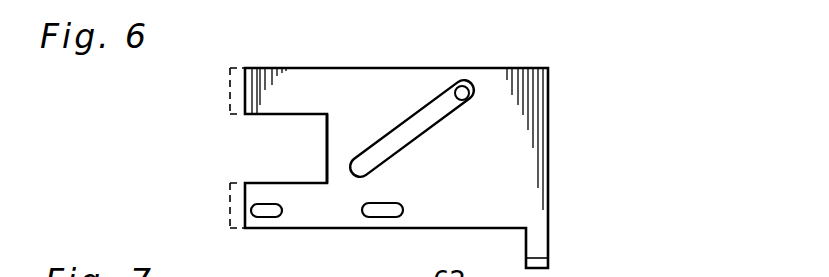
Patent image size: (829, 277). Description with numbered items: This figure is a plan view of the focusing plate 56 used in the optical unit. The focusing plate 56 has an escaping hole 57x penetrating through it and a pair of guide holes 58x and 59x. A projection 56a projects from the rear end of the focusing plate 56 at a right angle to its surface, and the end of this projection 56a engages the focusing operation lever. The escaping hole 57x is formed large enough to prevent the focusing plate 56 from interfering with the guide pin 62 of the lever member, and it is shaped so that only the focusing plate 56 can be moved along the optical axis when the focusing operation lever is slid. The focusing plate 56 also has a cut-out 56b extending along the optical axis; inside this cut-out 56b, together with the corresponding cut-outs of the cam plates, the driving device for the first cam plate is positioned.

The focusing plate 56 is at (548, 134).
The projection 56a is at (548, 258).
The cut-out 56b is at (268, 148).
The escaping hole 57x is at (418, 132).
The guide hole 58x is at (268, 217).
The guide hole 59x is at (387, 203).
The guide pin 62 is at (455, 87).